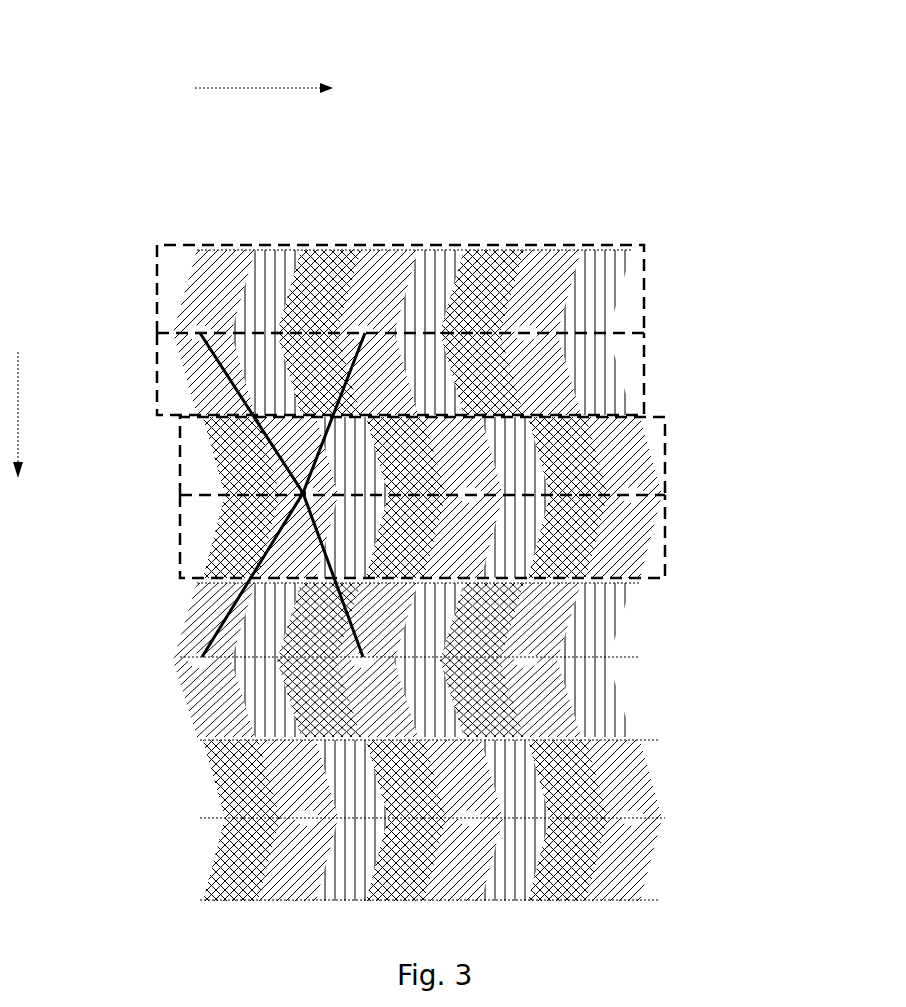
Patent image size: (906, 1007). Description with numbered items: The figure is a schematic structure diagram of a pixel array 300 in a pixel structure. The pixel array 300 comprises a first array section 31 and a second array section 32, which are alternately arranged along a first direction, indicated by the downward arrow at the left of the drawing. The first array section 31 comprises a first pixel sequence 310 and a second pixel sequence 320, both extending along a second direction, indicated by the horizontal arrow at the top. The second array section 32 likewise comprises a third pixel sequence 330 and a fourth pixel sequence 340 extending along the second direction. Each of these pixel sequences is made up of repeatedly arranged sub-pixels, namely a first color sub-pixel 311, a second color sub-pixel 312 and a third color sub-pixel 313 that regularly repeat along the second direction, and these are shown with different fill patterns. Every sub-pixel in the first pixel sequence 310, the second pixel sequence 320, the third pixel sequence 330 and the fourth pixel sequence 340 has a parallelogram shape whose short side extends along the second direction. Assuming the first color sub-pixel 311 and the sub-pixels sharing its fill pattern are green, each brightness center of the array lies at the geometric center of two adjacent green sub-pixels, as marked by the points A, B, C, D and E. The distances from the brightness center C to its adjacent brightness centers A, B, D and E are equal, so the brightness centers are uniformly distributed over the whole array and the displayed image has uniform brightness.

The pixel array 300 is at (592, 41).
The first array section 31 is at (480, 323).
The first pixel sequence 310 is at (645, 287).
The second pixel sequence 320 is at (645, 375).
The second array section 32 is at (505, 489).
The third pixel sequence 330 is at (666, 455).
The fourth pixel sequence 340 is at (666, 541).
The first color sub-pixel 311 is at (138, 309).
The second color sub-pixel 312 is at (199, 291).
The third color sub-pixel 313 is at (259, 269).
The brightness center A is at (195, 413).
The brightness center B is at (372, 342).
The brightness center C is at (197, 534).
The brightness center D is at (195, 602).
The brightness center E is at (225, 649).